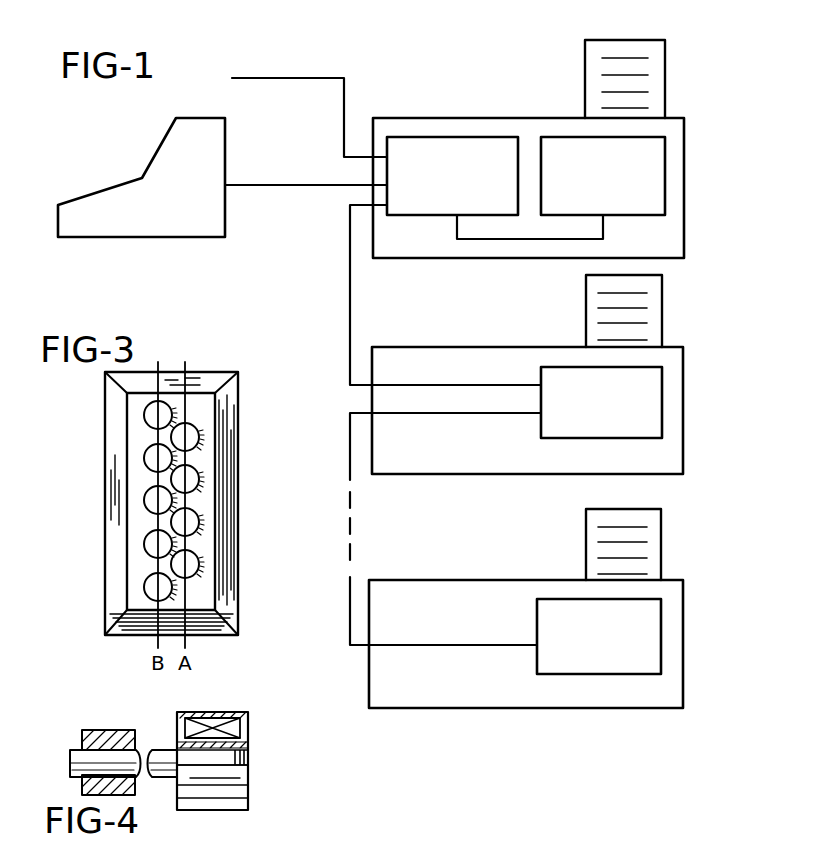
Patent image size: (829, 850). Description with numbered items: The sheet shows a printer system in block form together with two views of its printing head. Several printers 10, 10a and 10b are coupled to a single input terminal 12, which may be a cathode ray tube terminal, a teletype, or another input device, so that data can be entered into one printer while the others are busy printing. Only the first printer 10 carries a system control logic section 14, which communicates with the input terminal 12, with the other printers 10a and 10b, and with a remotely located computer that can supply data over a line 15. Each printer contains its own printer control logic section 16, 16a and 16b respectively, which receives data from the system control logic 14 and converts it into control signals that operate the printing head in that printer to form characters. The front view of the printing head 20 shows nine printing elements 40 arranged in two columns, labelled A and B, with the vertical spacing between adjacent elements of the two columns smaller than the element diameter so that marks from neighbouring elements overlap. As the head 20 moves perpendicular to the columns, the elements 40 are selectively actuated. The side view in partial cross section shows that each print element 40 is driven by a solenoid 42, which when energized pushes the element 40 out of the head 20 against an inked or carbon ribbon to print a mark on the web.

In FIG. 1, the printer 10 is at (550, 149).
In FIG. 1, the printer 10a is at (556, 374).
In FIG. 1, the printer 10b is at (557, 608).
In FIG. 1, the input terminal 12 is at (168, 128).
In FIG. 1, the system control logic section 14 is at (437, 137).
In FIG. 1, the line 15 is at (270, 78).
In FIG. 1, the printer control logic section 16 is at (658, 197).
In FIG. 1, the printer control logic section 16a is at (655, 424).
In FIG. 1, the printer control logic section 16b is at (662, 643).
In FIG. 3, the printing head 20 is at (208, 380).
In FIG. 4, the printing head 20 is at (94, 728).
In FIG. 3, the printing element 40 is at (145, 497).
In FIG. 4, the printing element 40 is at (168, 755).
In FIG. 4, the solenoid 42 is at (213, 712).